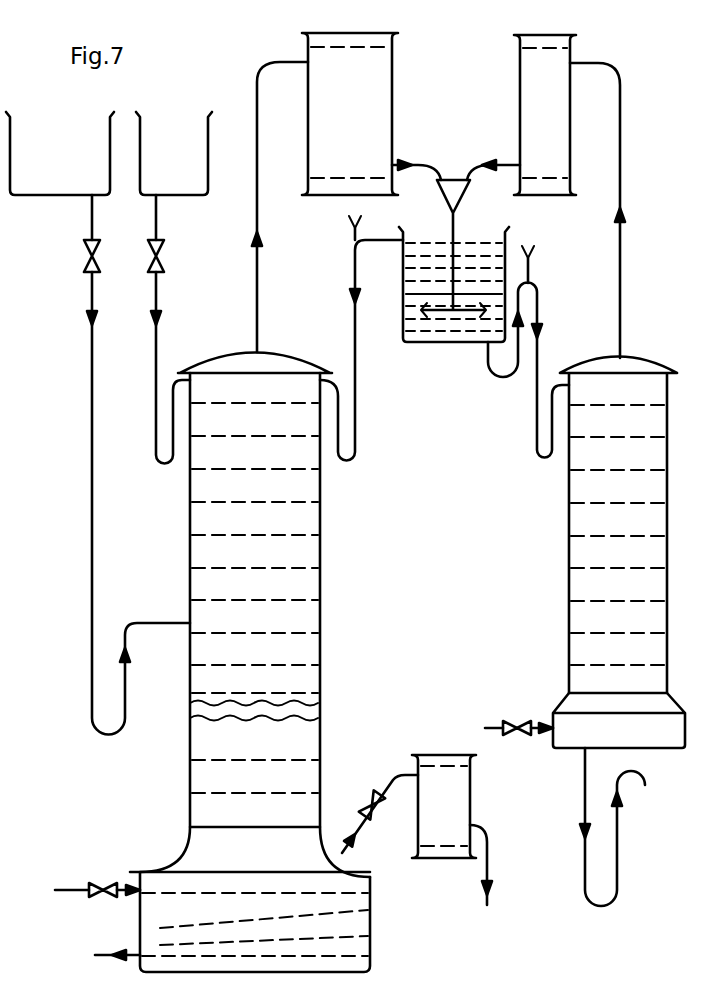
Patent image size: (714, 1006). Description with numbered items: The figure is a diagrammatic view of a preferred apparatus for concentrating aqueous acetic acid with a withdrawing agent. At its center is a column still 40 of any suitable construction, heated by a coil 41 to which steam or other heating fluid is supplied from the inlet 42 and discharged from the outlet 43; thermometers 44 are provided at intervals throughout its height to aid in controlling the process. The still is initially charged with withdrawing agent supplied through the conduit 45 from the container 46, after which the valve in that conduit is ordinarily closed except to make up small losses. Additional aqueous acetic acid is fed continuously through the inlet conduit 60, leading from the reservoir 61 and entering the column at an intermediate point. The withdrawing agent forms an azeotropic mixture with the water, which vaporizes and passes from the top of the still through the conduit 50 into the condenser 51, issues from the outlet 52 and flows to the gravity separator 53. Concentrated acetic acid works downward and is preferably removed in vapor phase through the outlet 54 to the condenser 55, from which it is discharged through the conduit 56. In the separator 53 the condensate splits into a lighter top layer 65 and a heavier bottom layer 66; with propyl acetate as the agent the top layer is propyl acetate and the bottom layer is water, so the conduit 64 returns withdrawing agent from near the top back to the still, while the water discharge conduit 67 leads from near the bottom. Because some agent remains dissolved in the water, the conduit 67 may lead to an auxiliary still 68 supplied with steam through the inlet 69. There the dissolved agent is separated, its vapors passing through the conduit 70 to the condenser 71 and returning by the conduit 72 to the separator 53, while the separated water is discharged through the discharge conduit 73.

The column still 40 is at (322, 655).
The coil 41 is at (296, 911).
The inlet 42 is at (85, 889).
The outlet 43 is at (126, 958).
The thermometers 44 is at (283, 366).
The conduit 45 is at (156, 308).
The container 46 is at (174, 153).
The conduit 50 is at (258, 313).
The condenser 51 is at (350, 114).
The outlet 52 is at (400, 163).
The separator 53 is at (505, 232).
The outlet 54 is at (384, 779).
The condenser 55 is at (444, 806).
The conduit 56 is at (520, 868).
The inlet conduit 60 is at (92, 484).
The reservoir 61 is at (60, 153).
The conduit 64 is at (357, 408).
The top layer 65 is at (416, 274).
The bottom layer 66 is at (480, 336).
The water discharge conduit 67 is at (560, 300).
The auxiliary still 68 is at (570, 539).
The inlet 69 is at (495, 728).
The conduit 70 is at (622, 256).
The condenser 71 is at (545, 115).
The conduit 72 is at (505, 165).
The discharge conduit 73 is at (585, 796).